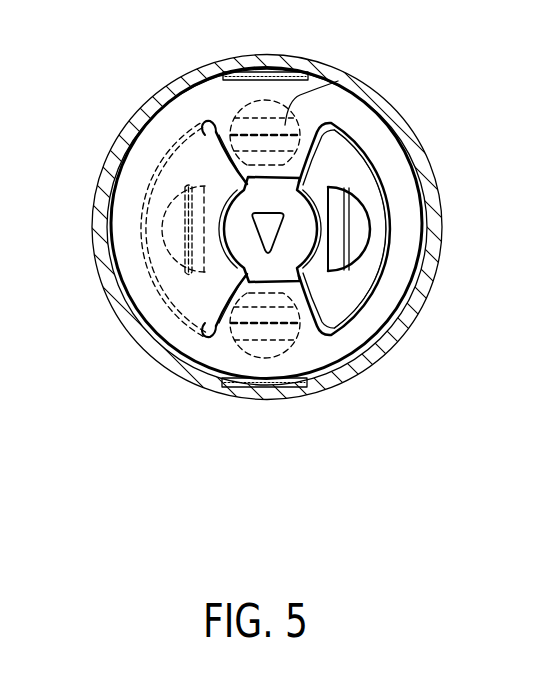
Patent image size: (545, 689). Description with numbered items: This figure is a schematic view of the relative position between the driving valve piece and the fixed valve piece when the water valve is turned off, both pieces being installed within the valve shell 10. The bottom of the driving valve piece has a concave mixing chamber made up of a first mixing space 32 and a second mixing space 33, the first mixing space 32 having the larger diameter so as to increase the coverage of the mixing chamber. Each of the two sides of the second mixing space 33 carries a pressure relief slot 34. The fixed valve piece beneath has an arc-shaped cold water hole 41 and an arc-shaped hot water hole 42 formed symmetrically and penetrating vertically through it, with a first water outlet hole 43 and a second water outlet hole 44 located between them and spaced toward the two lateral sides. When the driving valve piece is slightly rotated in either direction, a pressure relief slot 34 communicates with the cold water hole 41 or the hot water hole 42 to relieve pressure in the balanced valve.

The valve shell 10 is at (415, 330).
The first mixing space 32 is at (377, 168).
The second mixing space 33 is at (200, 183).
The pressure relief slot 34 is at (205, 122).
The cold water hole 41 is at (362, 233).
The hot water hole 42 is at (172, 229).
The first water outlet hole 43 is at (320, 337).
The second water outlet hole 44 is at (338, 81).